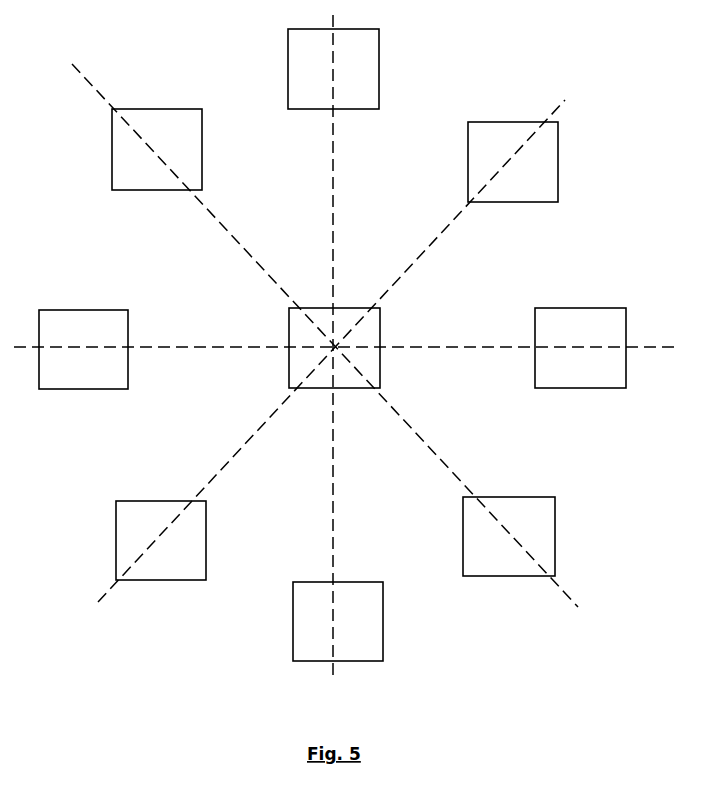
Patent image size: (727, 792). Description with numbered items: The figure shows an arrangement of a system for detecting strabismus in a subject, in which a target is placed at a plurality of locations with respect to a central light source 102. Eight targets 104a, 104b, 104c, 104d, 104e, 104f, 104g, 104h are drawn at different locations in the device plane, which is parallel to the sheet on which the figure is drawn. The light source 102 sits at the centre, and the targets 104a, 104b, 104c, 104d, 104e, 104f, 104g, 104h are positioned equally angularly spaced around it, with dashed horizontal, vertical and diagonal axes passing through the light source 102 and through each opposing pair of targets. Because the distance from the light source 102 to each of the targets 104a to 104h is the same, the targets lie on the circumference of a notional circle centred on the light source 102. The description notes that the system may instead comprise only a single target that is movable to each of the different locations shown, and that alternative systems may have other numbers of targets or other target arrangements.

The light source 102 is at (382, 323).
The target 104a is at (604, 307).
The target 104b is at (551, 512).
The target 104c is at (377, 620).
The target 104d is at (161, 577).
The target 104e is at (65, 381).
The target 104f is at (115, 153).
The target 104g is at (379, 68).
The target 104h is at (556, 157).